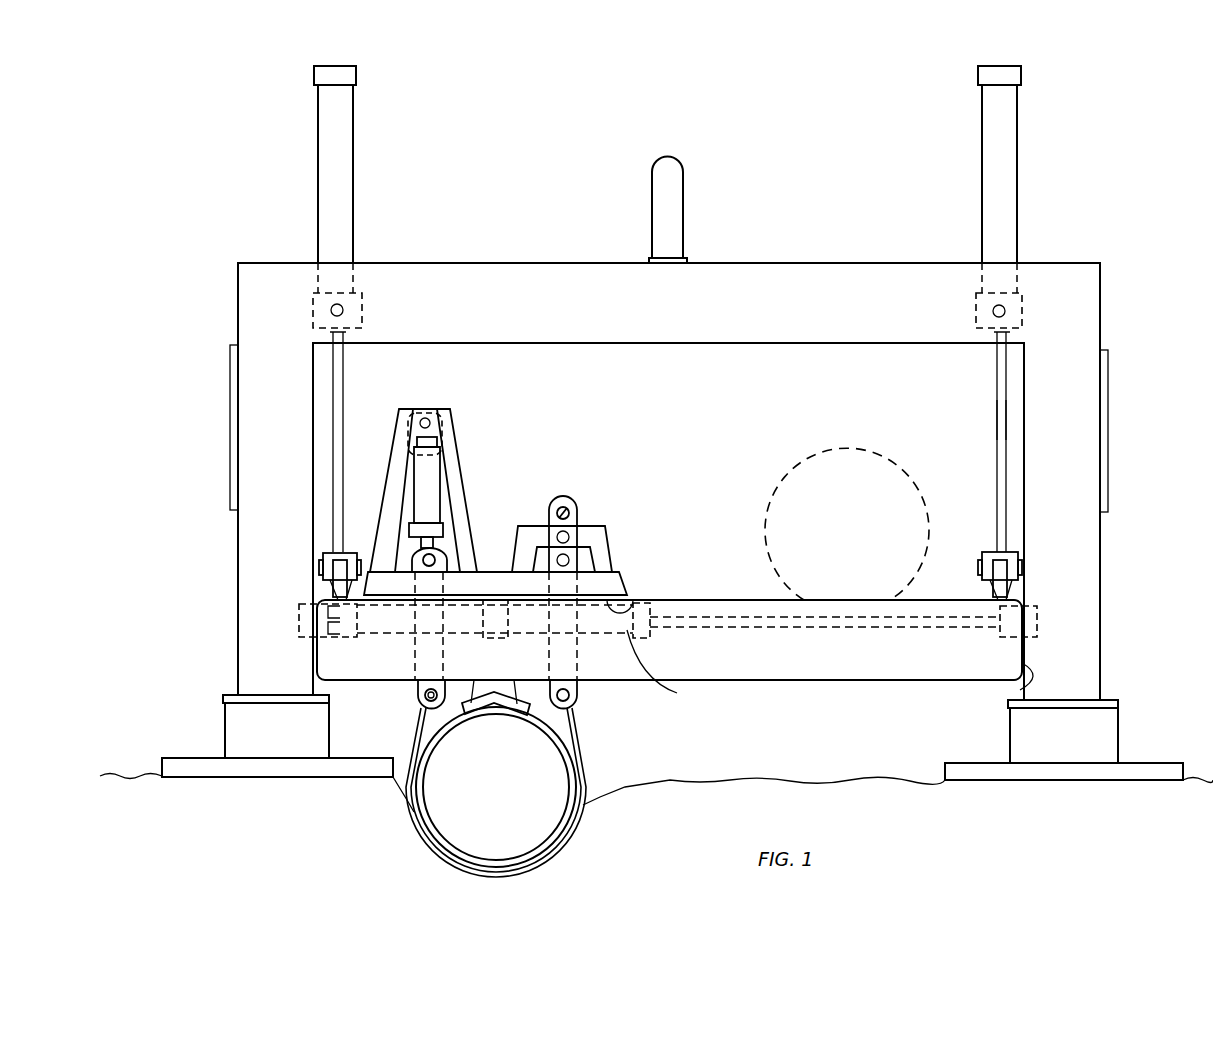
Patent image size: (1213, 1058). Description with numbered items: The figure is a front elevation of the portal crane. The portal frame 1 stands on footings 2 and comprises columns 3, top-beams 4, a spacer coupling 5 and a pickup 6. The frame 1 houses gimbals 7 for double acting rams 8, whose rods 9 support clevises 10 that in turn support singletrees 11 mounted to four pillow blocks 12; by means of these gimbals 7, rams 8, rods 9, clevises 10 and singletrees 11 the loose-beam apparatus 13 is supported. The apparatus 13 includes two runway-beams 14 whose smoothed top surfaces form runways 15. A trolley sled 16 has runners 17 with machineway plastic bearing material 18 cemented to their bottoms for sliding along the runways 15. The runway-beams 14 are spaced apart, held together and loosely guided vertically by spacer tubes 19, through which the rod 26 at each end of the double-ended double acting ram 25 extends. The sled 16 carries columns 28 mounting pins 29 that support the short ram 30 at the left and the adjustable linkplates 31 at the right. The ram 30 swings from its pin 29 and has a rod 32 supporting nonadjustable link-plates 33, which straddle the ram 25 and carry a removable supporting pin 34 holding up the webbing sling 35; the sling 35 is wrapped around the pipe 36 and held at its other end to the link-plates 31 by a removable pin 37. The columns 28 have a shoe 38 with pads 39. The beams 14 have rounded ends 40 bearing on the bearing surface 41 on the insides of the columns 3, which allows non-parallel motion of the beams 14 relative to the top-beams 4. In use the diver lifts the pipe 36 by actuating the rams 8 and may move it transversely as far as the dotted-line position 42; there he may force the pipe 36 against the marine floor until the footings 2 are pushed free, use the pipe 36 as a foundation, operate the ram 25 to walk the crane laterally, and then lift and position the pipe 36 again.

The portal frame 1 is at (1156, 536).
The footings 2 is at (1138, 770).
The columns 3 is at (252, 666).
The top-beams 4 is at (790, 270).
The spacer coupling 5 is at (1107, 382).
The pickup 6 is at (668, 214).
The gimbals 7 is at (356, 297).
The double acting rams 8 is at (343, 159).
The rods 9 is at (338, 393).
The clevises 10 is at (990, 553).
The singletrees 11 is at (338, 580).
The pillow blocks 12 is at (330, 590).
The loose-beam apparatus 13 is at (693, 459).
The runway-beams 14 is at (797, 668).
The runways 15 is at (839, 597).
The trolley sled 16 is at (528, 449).
The runners 17 is at (654, 576).
The machineway plastic bearing material 18 is at (645, 603).
The spacer tubes 19 is at (297, 618).
The double acting ram 25 is at (667, 668).
The rod 26 is at (718, 620).
The columns 28 is at (455, 502).
The pins 29 is at (430, 420).
The short ram 30 is at (428, 490).
The adjustable linkplates 31 is at (565, 508).
The rod 32 is at (433, 545).
The nonadjustable link-plates 33 is at (413, 690).
The removable supporting pin 34 is at (418, 700).
The webbing sling 35 is at (583, 743).
The pipe 36 is at (573, 788).
The removable pin 37 is at (575, 705).
The shoe 38 is at (528, 690).
The pads 39 is at (470, 706).
The rounded ends 40 is at (1018, 688).
The bearing surface 41 is at (1024, 418).
The position 42 is at (822, 470).